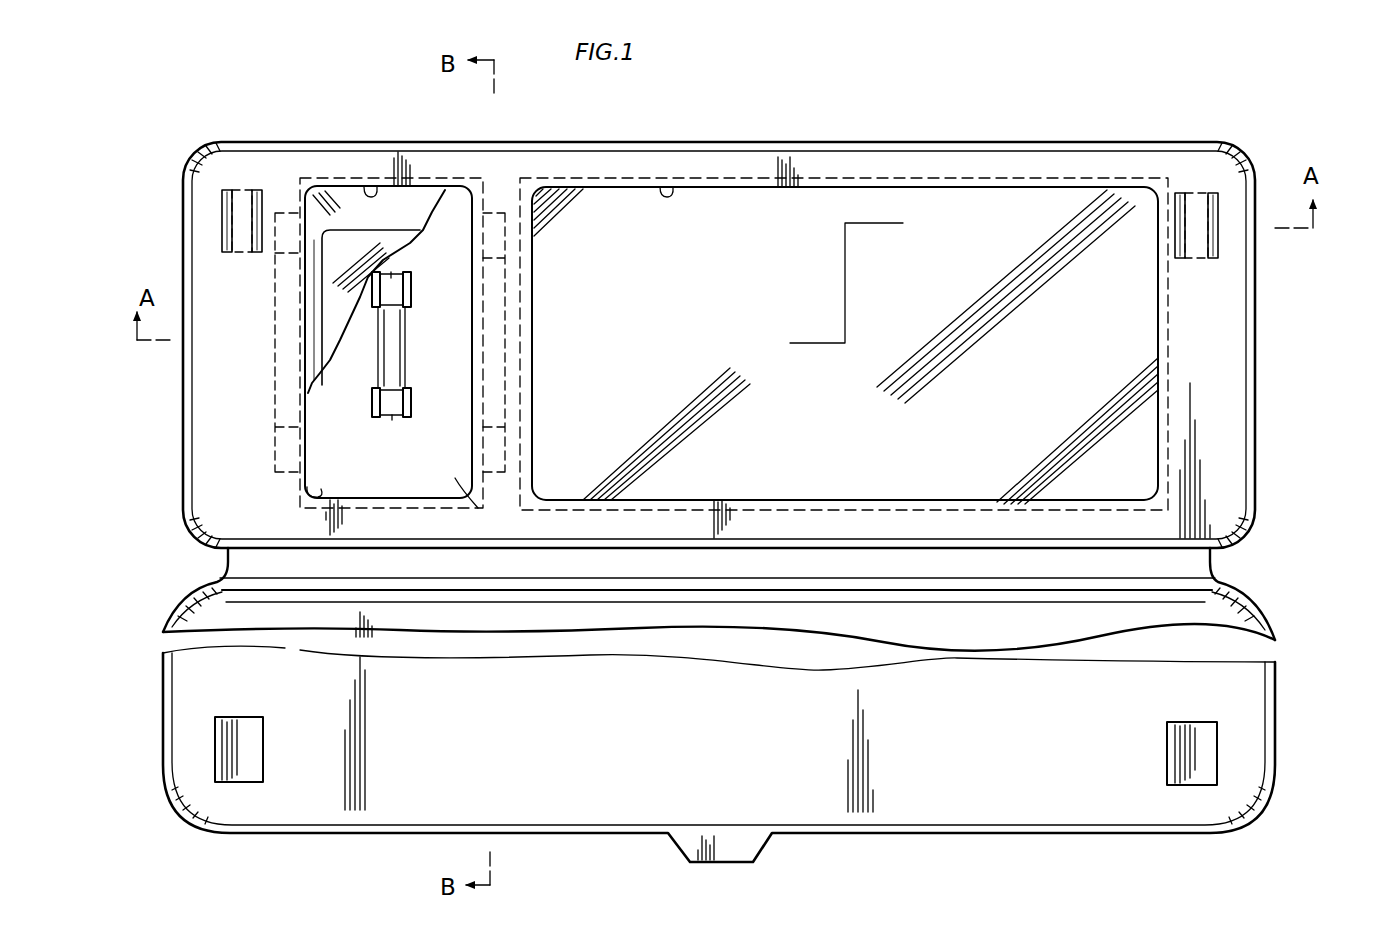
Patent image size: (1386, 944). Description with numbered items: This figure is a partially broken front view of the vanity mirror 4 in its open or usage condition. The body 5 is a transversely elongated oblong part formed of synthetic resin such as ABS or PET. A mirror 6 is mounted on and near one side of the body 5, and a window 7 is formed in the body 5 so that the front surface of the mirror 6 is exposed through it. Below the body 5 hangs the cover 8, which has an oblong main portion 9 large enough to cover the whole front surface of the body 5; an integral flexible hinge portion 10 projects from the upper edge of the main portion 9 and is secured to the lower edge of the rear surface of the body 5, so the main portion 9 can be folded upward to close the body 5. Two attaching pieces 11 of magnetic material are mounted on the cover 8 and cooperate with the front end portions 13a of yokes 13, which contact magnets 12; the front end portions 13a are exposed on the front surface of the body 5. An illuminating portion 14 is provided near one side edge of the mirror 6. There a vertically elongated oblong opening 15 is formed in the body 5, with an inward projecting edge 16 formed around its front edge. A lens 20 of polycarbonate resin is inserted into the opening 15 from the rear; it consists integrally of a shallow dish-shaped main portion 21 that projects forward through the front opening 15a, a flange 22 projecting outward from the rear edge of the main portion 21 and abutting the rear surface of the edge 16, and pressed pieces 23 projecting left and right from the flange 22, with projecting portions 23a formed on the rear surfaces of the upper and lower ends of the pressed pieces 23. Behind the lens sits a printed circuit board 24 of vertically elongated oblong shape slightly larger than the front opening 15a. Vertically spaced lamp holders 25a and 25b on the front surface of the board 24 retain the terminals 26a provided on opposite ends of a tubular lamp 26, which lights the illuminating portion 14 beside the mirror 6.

The case 4 is at (932, 124).
The body 5 is at (815, 162).
The mirror 6 is at (845, 293).
The window 7 is at (665, 187).
The cover 8 is at (1278, 678).
The main portion 9 is at (1244, 720).
The flexible hinge portion 10 is at (1194, 572).
The attaching piece 11 is at (253, 747).
The magnet 12 is at (243, 190).
The yoke 13 is at (256, 192).
The front end portion 13a is at (258, 210).
The illuminating portion 14 is at (445, 468).
The opening 15 is at (307, 489).
The front opening 15a is at (375, 188).
The inward projecting edge 16 is at (474, 425).
The lens 20 is at (333, 303).
The main portion 21 is at (333, 323).
The flange 22 is at (363, 305).
The pressed piece 23 is at (275, 392).
The projecting portion 23a is at (287, 260).
The printed circuit board 24 is at (846, 346).
The lamp holder 25a is at (411, 292).
The lamp holder 25b is at (372, 400).
The tubular lamp 26 is at (390, 350).
The terminal 26a is at (393, 272).